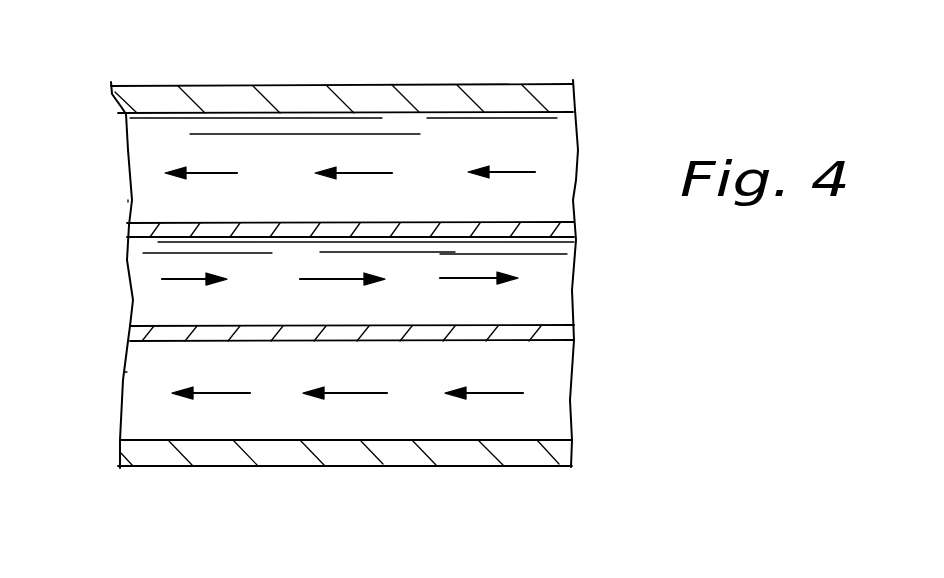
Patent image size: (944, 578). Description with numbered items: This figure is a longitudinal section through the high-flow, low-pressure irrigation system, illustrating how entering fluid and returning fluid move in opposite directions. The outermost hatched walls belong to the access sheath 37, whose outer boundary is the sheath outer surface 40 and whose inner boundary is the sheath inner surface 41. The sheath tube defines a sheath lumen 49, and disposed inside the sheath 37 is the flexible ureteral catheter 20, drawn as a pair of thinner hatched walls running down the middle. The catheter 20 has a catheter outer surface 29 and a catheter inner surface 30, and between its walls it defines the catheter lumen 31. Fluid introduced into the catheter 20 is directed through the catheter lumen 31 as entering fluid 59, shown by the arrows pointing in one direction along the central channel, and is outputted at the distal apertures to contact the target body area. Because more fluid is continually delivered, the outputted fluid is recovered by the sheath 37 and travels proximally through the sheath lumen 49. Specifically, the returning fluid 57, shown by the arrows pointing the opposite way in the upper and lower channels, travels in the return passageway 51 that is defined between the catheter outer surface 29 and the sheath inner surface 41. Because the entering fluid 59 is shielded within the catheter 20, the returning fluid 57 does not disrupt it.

The sheath outer surface 40 is at (441, 84).
The returning fluid 57 is at (227, 173).
The catheter outer surface 29 is at (437, 223).
The flexible ureteral catheter 20 is at (523, 231).
The return passageway 51 is at (150, 202).
The catheter inner surface 30 is at (180, 328).
The entering fluid 59 is at (480, 281).
The catheter lumen 31 is at (547, 313).
The sheath lumen 49 is at (540, 415).
The access sheath 37 is at (280, 448).
The sheath inner surface 41 is at (428, 441).